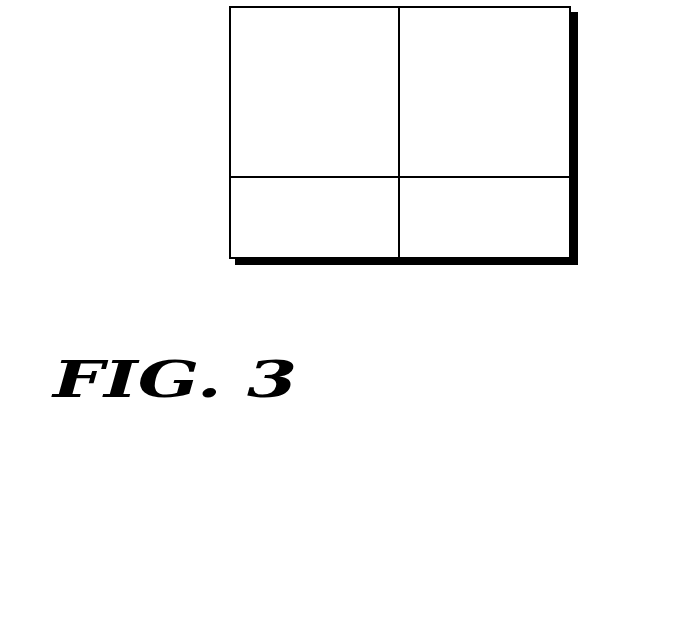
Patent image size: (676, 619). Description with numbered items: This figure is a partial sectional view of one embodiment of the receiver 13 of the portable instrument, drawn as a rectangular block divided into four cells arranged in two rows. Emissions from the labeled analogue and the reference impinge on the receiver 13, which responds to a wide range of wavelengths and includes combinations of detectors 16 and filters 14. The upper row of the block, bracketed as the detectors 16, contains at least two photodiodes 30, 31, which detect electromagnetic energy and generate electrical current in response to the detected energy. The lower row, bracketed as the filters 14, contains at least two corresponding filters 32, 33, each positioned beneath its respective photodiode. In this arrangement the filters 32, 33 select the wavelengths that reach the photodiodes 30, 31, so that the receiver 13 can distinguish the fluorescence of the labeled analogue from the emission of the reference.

The receiver 13 is at (387, 350).
The filters 14 is at (207, 178).
The detectors 16 is at (205, 8).
The photodiode 30 is at (299, 107).
The photodiode 31 is at (469, 107).
The filter 32 is at (299, 234).
The filter 33 is at (469, 234).